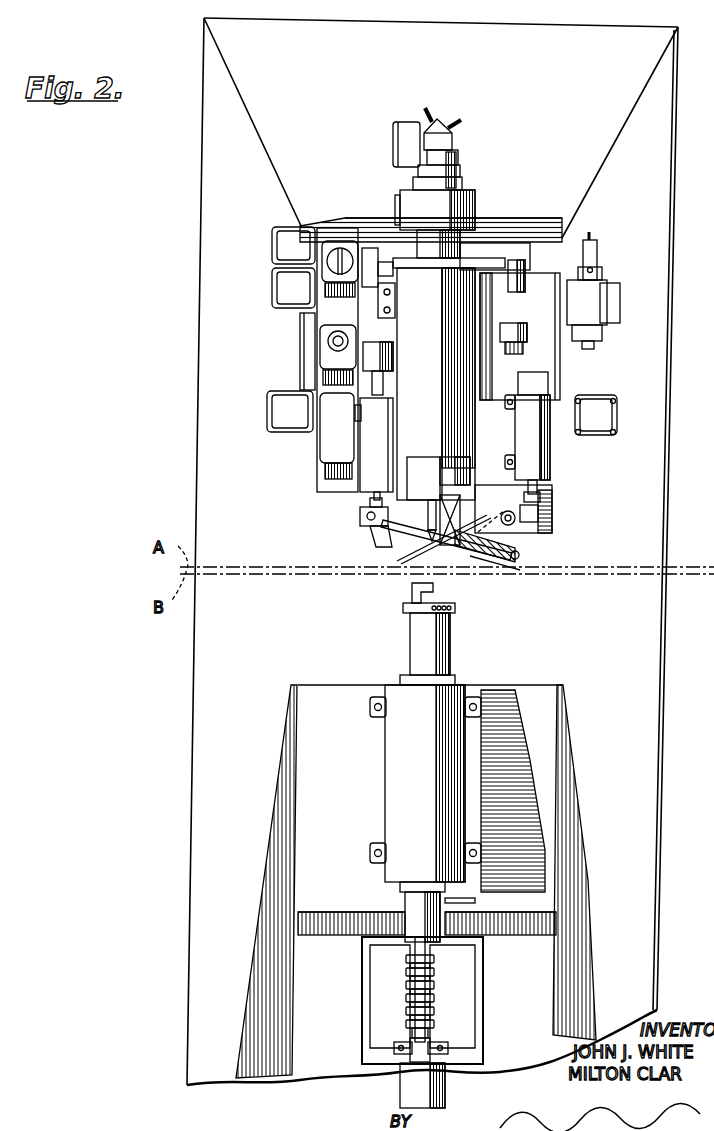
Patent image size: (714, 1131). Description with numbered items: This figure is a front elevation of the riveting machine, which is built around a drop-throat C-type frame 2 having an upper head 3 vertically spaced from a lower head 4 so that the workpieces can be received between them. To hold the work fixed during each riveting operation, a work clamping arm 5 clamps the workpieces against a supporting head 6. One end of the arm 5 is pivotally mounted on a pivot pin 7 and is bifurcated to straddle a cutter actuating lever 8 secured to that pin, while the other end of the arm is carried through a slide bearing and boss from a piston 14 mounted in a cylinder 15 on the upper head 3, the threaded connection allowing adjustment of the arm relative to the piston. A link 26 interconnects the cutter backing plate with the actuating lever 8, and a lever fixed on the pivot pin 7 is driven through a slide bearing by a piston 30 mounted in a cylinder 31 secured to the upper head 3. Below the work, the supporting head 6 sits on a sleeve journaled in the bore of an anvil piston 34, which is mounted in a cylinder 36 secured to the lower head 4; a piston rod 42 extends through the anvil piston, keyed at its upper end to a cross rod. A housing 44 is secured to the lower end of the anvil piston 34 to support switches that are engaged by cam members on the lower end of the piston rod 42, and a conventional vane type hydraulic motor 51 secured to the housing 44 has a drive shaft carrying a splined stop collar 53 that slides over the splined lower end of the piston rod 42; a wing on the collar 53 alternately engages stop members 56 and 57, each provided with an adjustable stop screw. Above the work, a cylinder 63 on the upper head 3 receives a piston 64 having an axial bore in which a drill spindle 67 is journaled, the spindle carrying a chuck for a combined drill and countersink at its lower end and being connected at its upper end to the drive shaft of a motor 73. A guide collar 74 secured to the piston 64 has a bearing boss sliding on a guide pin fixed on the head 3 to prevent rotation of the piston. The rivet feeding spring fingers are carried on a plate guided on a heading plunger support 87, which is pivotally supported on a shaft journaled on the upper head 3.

The drop-throat C-type frame 2 is at (204, 201).
The upper head 3 is at (296, 191).
The lower head 4 is at (292, 712).
The work clamping arm 5 is at (372, 526).
The supporting head 6 is at (410, 596).
The pivot pin 7 is at (497, 520).
The cutter actuating lever 8 is at (515, 543).
The piston 14 is at (368, 497).
The cylinder 15 is at (367, 440).
The link 26 is at (508, 564).
The piston 30 is at (543, 497).
The cylinder 31 is at (533, 455).
The anvil piston 34 is at (408, 626).
The cylinder 36 is at (392, 793).
The piston rod 42 is at (418, 945).
The housing 44 is at (362, 968).
The vane type hydraulic motor 51 is at (400, 1093).
The splined stop collar 53 is at (430, 1042).
The stop member 56 is at (398, 1040).
The stop member 57 is at (453, 1045).
The cylinder 63 is at (432, 365).
The piston 64 is at (426, 467).
The drill spindle 67 is at (407, 548).
The motor 73 is at (453, 140).
The guide collar 74 is at (478, 216).
The heading plunger support 87 is at (386, 540).